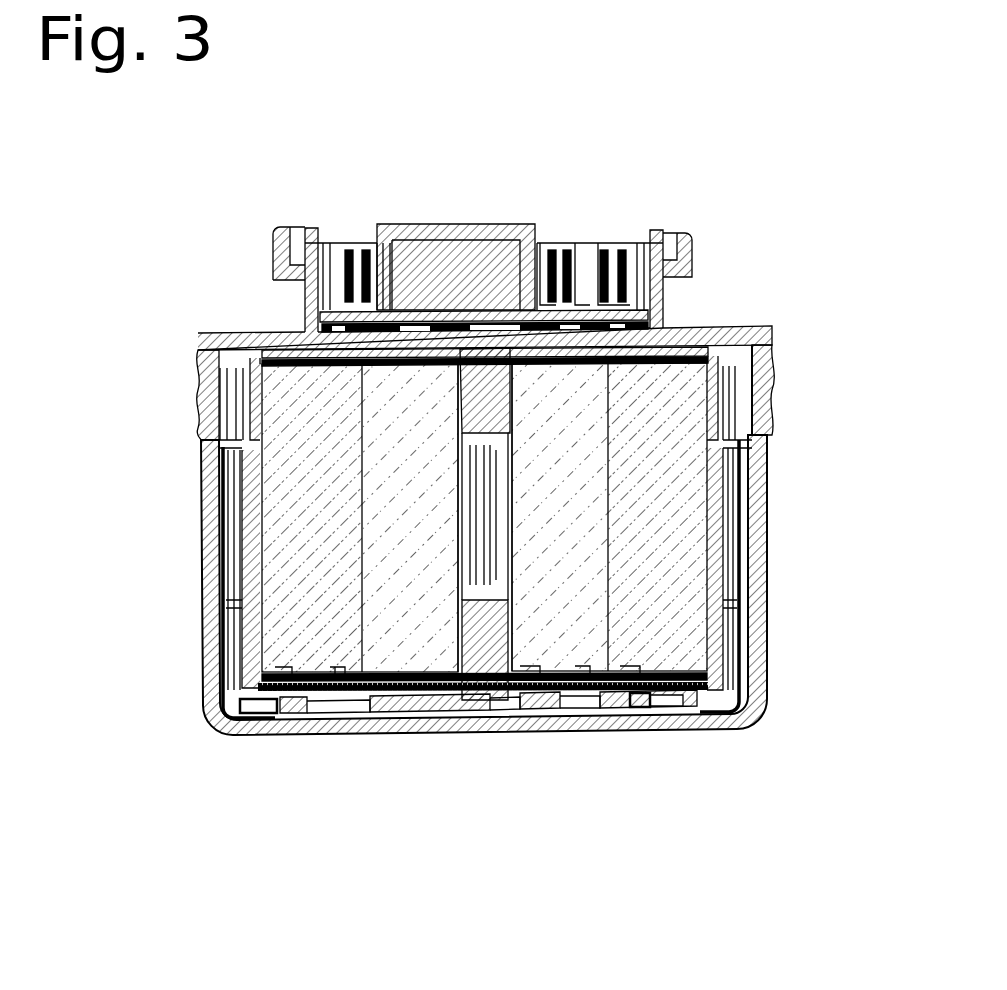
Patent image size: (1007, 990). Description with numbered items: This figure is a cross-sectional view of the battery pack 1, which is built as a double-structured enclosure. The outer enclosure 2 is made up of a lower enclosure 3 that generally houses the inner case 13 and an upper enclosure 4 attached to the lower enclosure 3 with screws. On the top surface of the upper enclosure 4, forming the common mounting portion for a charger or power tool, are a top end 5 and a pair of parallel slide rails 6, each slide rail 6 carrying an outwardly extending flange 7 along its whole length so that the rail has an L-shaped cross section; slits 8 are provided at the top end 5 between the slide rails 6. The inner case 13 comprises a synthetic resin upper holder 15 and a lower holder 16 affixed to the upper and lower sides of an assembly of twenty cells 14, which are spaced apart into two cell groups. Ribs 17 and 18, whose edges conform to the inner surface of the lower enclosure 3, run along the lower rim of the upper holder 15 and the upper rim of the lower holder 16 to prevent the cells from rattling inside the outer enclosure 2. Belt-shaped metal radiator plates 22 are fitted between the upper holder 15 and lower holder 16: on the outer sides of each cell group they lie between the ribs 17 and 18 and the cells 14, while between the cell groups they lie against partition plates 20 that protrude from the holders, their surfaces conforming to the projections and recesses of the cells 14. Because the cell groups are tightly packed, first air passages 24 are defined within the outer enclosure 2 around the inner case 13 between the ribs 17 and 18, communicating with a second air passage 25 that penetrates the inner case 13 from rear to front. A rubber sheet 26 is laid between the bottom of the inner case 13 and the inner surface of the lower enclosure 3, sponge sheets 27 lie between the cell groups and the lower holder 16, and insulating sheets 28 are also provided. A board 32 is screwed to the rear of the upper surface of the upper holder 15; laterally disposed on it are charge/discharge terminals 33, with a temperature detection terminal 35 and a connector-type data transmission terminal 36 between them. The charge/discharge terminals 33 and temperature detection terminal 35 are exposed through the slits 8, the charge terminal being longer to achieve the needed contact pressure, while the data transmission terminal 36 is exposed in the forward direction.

The battery pack 1 is at (617, 178).
The outer enclosure 2 is at (786, 350).
The lower enclosure 3 is at (765, 693).
The upper enclosure 4 is at (770, 328).
The top end 5 is at (470, 222).
The slide rail 6 is at (290, 240).
The flange 7 is at (270, 255).
The slit 8 is at (355, 250).
The inner case 13 is at (740, 392).
The cell 14 is at (285, 410).
The upper holder 15 is at (725, 322).
The lower holder 16 is at (672, 737).
The rib 17 is at (210, 450).
The rib 18 is at (197, 607).
The partition plate 20 is at (485, 383).
The radiator plate 22 is at (200, 560).
The first air passage 24 is at (213, 517).
The second air passage 25 is at (370, 735).
The rubber sheet 26 is at (290, 735).
The sponge sheet 27 is at (252, 738).
The insulating sheet 28 is at (275, 360).
The board 32 is at (395, 260).
The charge/discharge terminal 33 is at (335, 245).
The temperature detection terminal 35 is at (555, 230).
The connector-type data transmission terminal 36 is at (440, 240).